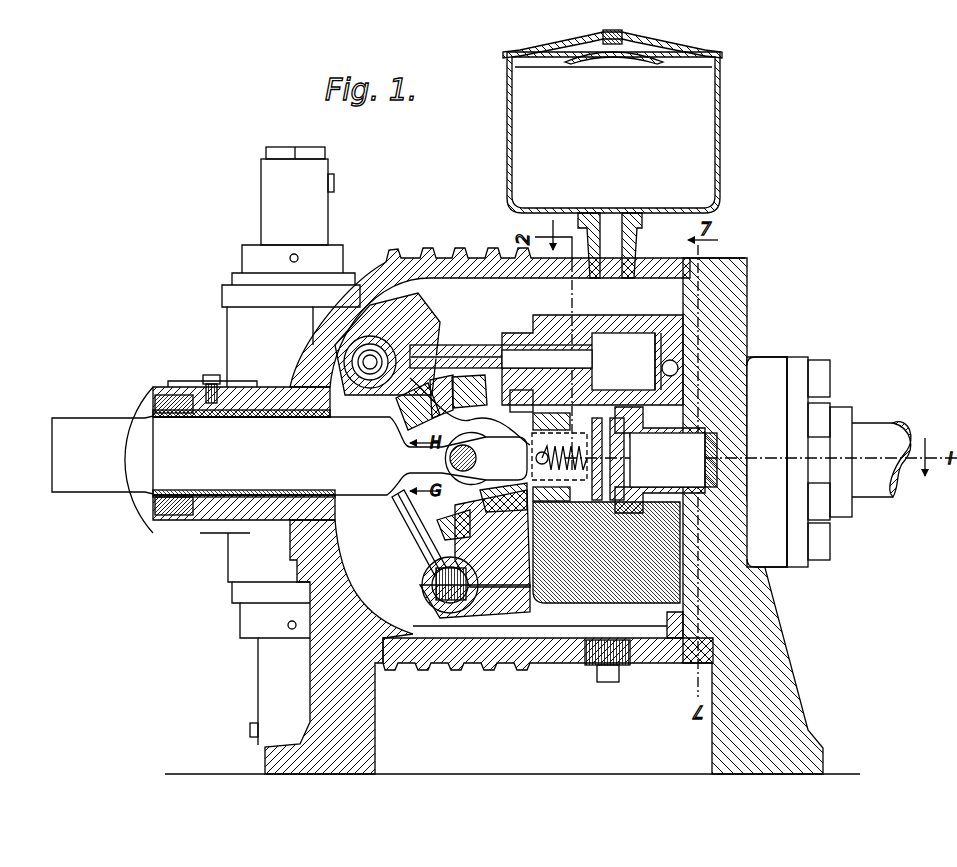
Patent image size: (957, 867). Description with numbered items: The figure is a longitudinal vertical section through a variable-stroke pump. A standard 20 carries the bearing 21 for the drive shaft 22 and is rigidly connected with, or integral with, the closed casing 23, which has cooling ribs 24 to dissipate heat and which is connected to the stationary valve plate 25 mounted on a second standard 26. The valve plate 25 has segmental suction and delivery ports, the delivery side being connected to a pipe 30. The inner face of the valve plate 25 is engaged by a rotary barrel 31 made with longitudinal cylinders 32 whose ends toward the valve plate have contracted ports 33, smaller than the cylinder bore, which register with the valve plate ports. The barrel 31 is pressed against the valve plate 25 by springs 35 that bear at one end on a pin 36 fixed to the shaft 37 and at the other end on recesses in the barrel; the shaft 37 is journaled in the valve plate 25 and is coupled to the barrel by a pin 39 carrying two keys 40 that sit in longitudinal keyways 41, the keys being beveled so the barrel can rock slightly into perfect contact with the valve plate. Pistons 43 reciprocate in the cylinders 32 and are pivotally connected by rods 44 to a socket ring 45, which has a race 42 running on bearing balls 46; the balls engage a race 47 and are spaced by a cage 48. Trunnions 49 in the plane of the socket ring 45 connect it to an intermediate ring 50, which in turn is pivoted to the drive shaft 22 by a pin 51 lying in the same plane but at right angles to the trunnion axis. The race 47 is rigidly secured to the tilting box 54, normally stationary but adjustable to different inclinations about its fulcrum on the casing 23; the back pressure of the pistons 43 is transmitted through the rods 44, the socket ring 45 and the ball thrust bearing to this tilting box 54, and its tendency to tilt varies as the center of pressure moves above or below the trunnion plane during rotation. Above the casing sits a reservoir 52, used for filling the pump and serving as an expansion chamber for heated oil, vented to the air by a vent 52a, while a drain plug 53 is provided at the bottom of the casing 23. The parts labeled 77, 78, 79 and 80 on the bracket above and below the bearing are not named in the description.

The standard 20 is at (376, 698).
The bearing 21 is at (268, 522).
The drive shaft 22 is at (247, 455).
The closed casing 23 is at (556, 664).
The cooling ribs 24 is at (462, 670).
The stationary valve plate 25 is at (684, 590).
The standard 26 is at (790, 718).
The pipe 30 is at (849, 462).
The rotary barrel 31 is at (622, 603).
The cylinders 32 is at (592, 360).
The contracted ports 33 is at (662, 369).
The springs 35 is at (537, 465).
The pin 36 is at (538, 458).
The shaft 37 is at (666, 460).
The pin 39 is at (594, 430).
The keys 40 is at (615, 432).
The keyways 41 is at (505, 418).
The race 42 is at (428, 465).
The pistons 43 is at (590, 350).
The rods 44 is at (477, 345).
The socket ring 45 is at (412, 332).
The bearing balls 46 is at (353, 415).
The race 47 is at (422, 603).
The cage 48 is at (430, 580).
The trunnions 49 is at (440, 420).
The intermediate ring 50 is at (490, 395).
The pin 51 is at (463, 446).
The reservoir 52 is at (612, 155).
The vent 52a is at (612, 32).
The drain plug 53 is at (612, 683).
The tilting box 54 is at (525, 612).
The set screw 77 is at (334, 183).
The column 78 is at (326, 219).
The bracket 79 is at (232, 313).
The nut 80 is at (278, 150).